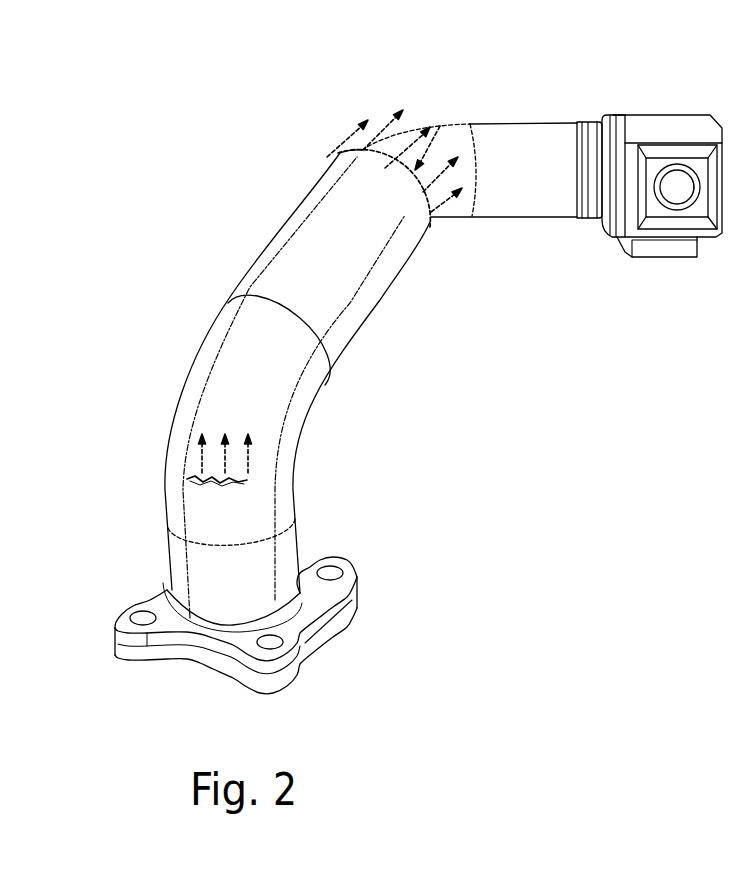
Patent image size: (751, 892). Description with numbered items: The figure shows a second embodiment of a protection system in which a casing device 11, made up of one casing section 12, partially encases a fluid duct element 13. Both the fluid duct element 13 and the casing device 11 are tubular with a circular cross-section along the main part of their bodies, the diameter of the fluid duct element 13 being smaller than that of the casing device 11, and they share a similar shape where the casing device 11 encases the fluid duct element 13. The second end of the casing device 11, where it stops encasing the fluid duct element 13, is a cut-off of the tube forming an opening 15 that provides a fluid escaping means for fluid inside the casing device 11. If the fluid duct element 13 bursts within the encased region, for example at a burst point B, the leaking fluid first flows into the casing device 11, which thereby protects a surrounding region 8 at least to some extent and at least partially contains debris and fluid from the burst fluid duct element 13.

The casing device 11 is at (207, 243).
The casing section 12 is at (206, 334).
The fluid duct element 13 is at (510, 192).
The opening 15 is at (403, 222).
The region 8 is at (427, 417).
The burst point B is at (240, 480).